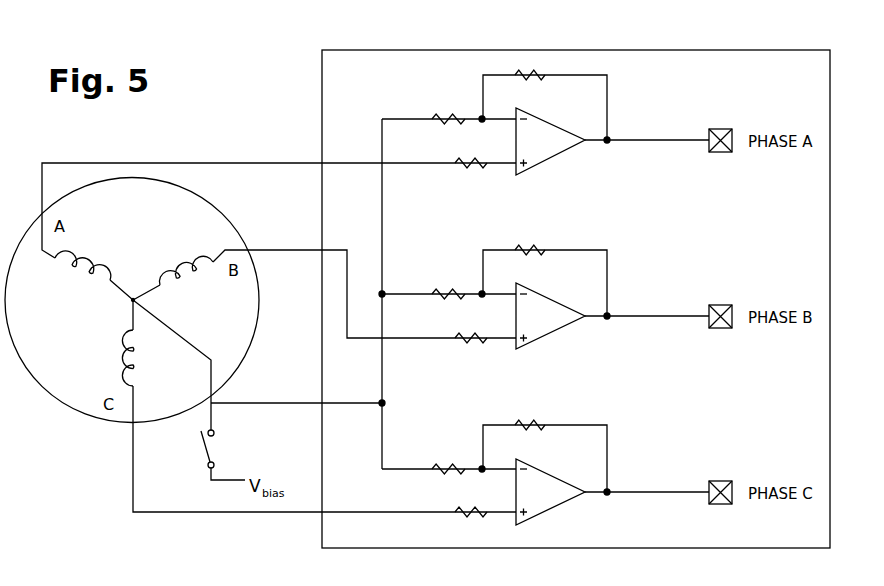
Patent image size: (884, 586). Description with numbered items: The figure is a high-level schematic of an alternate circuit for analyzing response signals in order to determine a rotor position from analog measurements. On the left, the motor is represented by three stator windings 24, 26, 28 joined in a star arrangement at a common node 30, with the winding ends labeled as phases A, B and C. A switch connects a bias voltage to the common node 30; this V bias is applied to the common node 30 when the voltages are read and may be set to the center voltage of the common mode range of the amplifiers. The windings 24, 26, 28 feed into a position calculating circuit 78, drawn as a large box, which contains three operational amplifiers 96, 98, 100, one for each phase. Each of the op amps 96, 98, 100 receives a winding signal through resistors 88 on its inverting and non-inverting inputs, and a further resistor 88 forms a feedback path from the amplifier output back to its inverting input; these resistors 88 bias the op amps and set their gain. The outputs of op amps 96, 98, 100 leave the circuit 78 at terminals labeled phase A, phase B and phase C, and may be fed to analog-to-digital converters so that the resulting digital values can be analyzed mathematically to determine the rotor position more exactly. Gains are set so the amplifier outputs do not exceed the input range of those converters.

The stator winding 24 is at (91, 261).
The stator winding 26 is at (195, 273).
The stator winding 28 is at (114, 340).
The common node 30 is at (133, 300).
The position calculating circuit 78 is at (322, 85).
The resistors 88 is at (516, 73).
The operational amplifier 96 is at (560, 153).
The operational amplifier 98 is at (560, 329).
The operational amplifier 100 is at (556, 505).